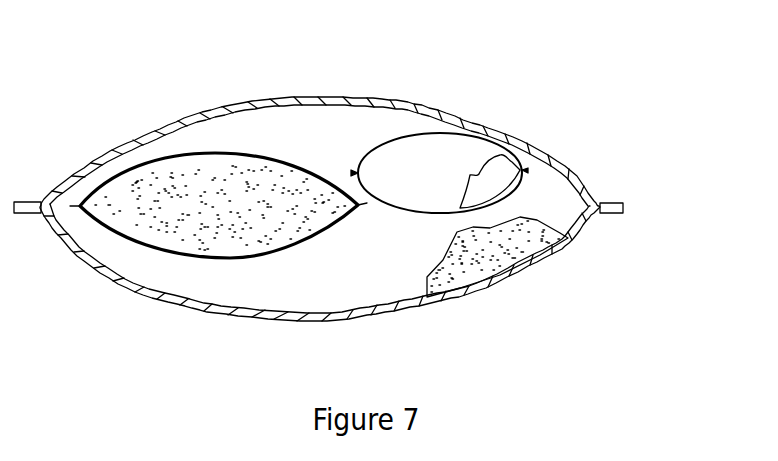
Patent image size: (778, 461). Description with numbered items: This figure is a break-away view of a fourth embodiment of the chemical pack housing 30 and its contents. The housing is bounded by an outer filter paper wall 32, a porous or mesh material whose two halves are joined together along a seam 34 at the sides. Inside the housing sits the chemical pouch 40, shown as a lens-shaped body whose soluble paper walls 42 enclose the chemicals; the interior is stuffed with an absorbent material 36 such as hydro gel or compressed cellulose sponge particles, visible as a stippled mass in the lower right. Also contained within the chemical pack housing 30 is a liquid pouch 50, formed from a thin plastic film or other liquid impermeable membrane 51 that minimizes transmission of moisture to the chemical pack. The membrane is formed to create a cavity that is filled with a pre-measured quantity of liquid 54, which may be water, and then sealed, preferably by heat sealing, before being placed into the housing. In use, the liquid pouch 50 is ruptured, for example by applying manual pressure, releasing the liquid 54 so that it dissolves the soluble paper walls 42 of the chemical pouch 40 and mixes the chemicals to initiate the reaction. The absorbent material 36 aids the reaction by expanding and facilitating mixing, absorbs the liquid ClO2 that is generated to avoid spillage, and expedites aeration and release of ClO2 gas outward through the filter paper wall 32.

The chemical pack housing 30 is at (346, 179).
The outer filter paper wall 32 is at (560, 157).
The seam 34 is at (609, 216).
The absorbent material 36 is at (520, 247).
The chemical pouch 40 is at (298, 155).
The soluble paper walls 42 is at (208, 153).
The liquid pouch 50 is at (465, 129).
The liquid impermeable membrane 51 is at (450, 131).
The liquid 54 is at (500, 187).